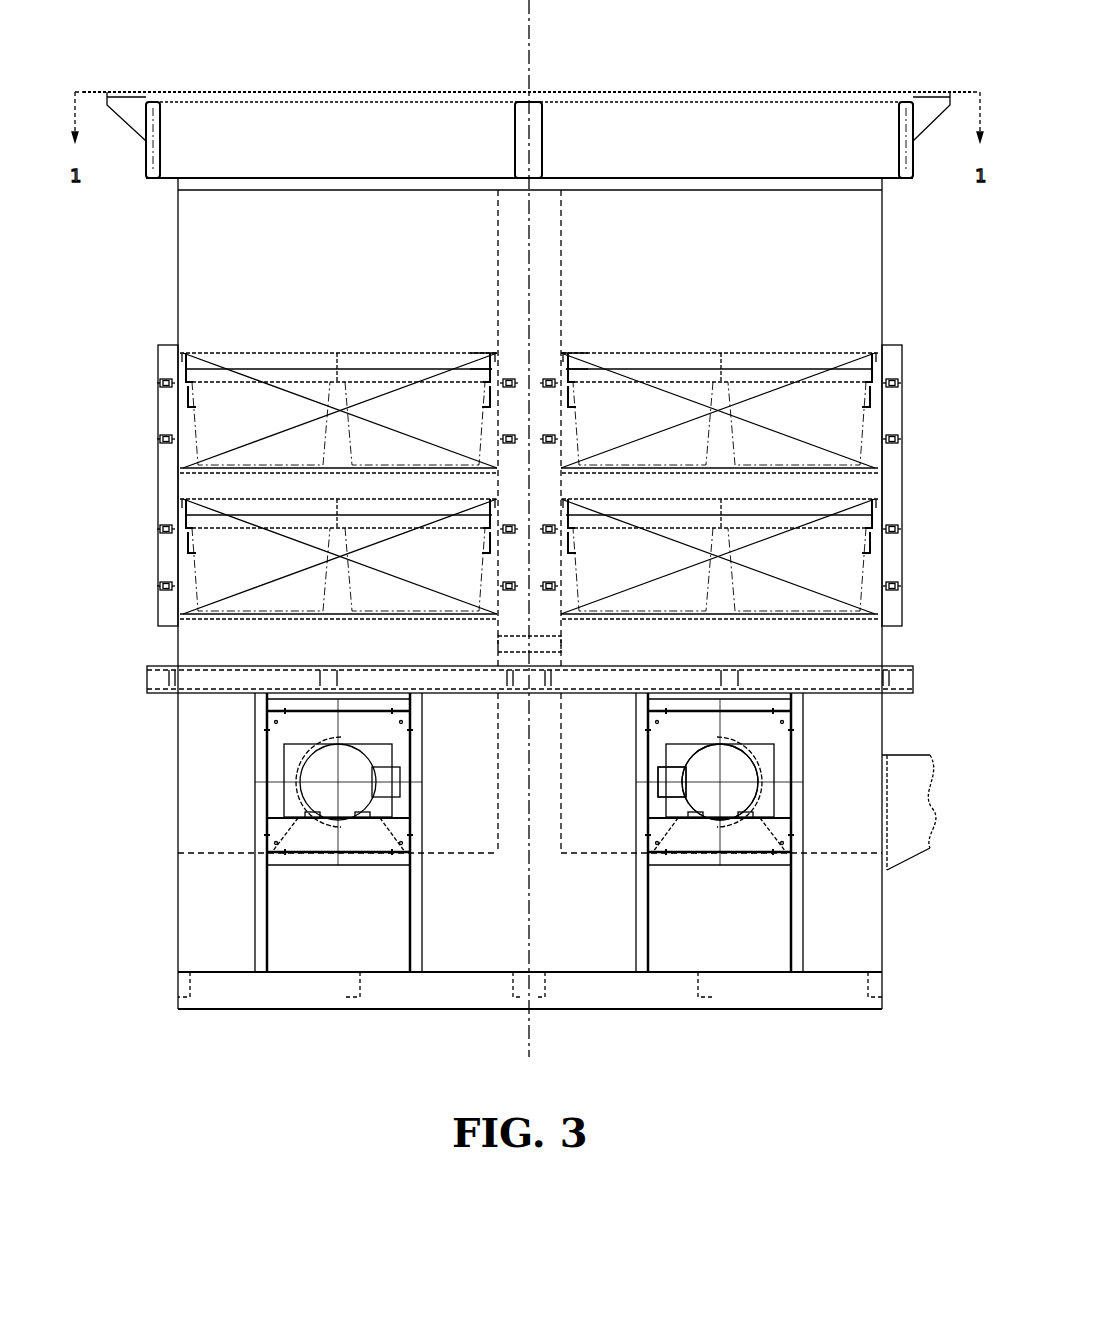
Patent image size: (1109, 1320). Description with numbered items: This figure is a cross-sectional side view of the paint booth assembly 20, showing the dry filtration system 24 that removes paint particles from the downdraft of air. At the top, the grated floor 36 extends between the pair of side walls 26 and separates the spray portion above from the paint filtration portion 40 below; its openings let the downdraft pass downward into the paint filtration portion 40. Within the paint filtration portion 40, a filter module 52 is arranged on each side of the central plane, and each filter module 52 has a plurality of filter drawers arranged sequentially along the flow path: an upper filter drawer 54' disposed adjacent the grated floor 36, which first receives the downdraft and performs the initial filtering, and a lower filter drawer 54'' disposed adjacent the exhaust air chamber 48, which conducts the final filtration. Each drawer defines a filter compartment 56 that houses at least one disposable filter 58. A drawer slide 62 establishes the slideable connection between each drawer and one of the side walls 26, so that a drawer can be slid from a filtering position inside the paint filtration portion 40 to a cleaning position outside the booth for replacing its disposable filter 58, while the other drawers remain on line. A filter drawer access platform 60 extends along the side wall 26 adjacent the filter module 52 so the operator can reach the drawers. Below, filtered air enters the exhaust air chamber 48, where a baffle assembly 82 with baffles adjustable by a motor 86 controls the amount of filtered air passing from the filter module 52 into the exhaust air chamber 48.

The paint booth assembly 20 is at (112, 1030).
The dry filtration system 24 is at (892, 340).
The side walls 26 is at (882, 283).
The grated floor 36 is at (790, 92).
The paint filtration portion 40 is at (238, 258).
The exhaust air chamber 48 is at (217, 797).
The filter module 52 is at (182, 483).
The upper filter drawer 54' is at (141, 388).
The lower filter drawer 54'' is at (133, 544).
The filter compartment 56 is at (472, 360).
The disposable filter 58 is at (198, 418).
The filter drawer access platform 60 is at (220, 667).
The drawer slide 62 is at (160, 437).
The baffle assembly 82 is at (812, 890).
The motor 86 is at (733, 798).